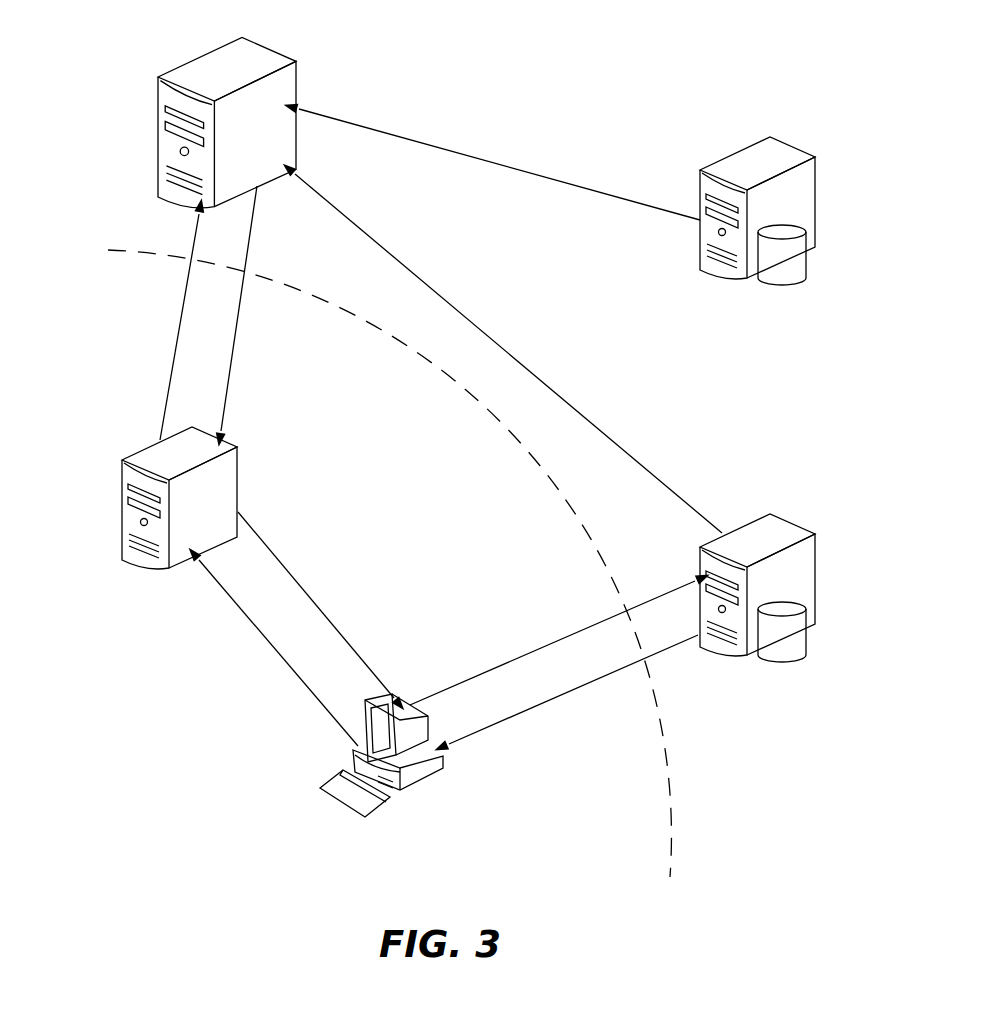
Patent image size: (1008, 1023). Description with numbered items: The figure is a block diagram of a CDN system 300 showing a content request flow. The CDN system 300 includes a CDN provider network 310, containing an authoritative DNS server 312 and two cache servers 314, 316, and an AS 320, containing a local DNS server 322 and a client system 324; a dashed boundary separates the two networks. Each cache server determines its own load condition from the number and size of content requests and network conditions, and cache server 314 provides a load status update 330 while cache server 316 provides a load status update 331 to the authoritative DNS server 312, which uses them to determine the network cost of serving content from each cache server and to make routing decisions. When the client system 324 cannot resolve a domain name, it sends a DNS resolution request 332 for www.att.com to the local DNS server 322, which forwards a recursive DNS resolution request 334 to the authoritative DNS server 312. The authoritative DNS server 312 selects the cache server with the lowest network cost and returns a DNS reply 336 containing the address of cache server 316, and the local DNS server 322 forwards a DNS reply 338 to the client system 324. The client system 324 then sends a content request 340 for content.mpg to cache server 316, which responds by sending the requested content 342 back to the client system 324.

The CDN system 300 is at (136, 896).
The CDN provider network 310 is at (618, 92).
The authoritative DNS server 312 is at (270, 45).
The cache server 314 is at (782, 136).
The cache server 316 is at (782, 512).
The AS 320 is at (177, 745).
The local DNS server 322 is at (126, 562).
The client system 324 is at (347, 806).
The load status update 330 is at (542, 177).
The load status update 331 is at (543, 356).
The DNS resolution request 332 is at (284, 651).
The recursive DNS resolution request 334 is at (170, 381).
The DNS reply 336 is at (240, 330).
The DNS reply 338 is at (330, 614).
The content request 340 is at (540, 648).
The requested content 342 is at (570, 693).